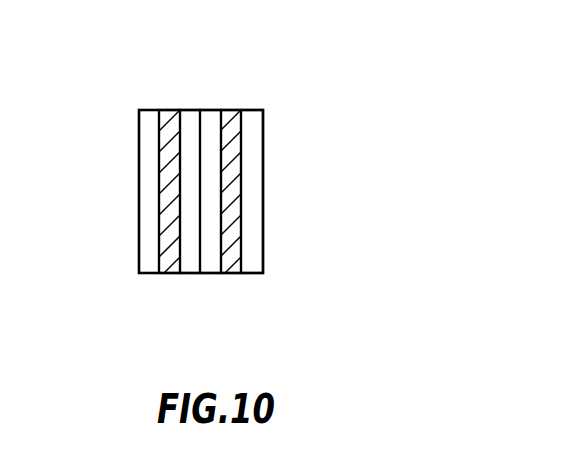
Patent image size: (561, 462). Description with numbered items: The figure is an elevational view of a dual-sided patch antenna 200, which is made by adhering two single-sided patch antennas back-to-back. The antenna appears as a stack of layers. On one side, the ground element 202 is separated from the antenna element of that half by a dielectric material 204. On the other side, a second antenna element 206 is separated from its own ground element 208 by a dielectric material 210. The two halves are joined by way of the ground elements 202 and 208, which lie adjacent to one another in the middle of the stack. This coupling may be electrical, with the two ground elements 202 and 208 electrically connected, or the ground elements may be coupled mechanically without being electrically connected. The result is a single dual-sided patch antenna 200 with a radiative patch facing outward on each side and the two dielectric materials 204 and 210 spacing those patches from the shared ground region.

The dual-sided patch antenna 200 is at (140, 135).
The ground element 202 is at (190, 110).
The dielectric material 204 is at (167, 273).
The second antenna element 206 is at (263, 194).
The ground element 208 is at (212, 110).
The dielectric material 210 is at (228, 273).